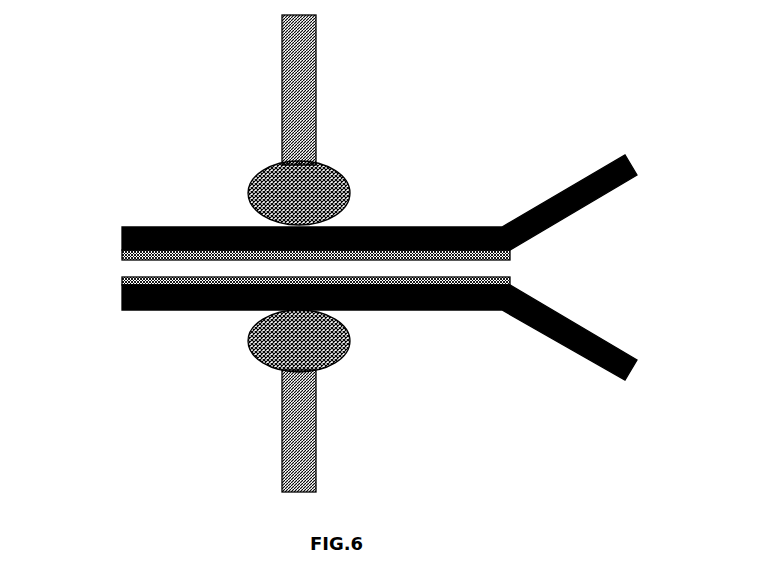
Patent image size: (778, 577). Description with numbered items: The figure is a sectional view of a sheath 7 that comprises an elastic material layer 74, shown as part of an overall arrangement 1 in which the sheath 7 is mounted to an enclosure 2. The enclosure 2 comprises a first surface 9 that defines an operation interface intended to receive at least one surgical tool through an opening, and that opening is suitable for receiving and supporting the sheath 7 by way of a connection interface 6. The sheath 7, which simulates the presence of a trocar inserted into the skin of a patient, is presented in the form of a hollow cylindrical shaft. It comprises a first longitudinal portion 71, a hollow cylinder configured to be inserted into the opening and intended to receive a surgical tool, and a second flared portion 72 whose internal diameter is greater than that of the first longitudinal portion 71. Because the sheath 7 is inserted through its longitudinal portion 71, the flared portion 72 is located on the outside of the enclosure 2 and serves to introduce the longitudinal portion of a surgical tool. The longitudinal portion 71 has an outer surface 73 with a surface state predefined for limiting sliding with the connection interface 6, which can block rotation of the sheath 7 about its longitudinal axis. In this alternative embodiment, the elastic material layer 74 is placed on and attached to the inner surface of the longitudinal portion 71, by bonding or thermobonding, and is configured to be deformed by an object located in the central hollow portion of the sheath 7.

The electrical connection structure 1 is at (193, 111).
The enclosure 2 is at (282, 95).
The connection interface 6 is at (248, 193).
The sheath 7 is at (340, 243).
The first longitudinal portion 71 is at (363, 225).
The second flared portion 72 is at (577, 178).
The outer surface 73 is at (352, 312).
The elastic material layer 74 is at (121, 280).
The first surface 9 is at (317, 108).